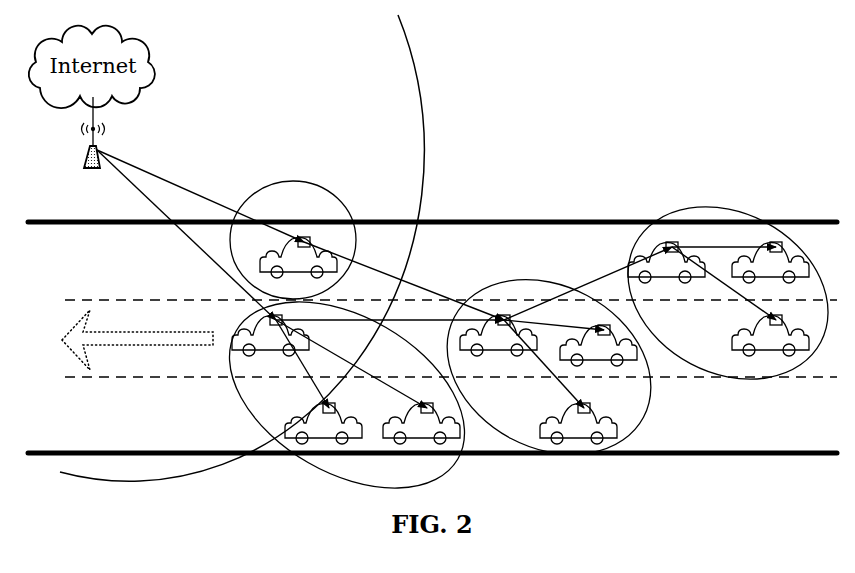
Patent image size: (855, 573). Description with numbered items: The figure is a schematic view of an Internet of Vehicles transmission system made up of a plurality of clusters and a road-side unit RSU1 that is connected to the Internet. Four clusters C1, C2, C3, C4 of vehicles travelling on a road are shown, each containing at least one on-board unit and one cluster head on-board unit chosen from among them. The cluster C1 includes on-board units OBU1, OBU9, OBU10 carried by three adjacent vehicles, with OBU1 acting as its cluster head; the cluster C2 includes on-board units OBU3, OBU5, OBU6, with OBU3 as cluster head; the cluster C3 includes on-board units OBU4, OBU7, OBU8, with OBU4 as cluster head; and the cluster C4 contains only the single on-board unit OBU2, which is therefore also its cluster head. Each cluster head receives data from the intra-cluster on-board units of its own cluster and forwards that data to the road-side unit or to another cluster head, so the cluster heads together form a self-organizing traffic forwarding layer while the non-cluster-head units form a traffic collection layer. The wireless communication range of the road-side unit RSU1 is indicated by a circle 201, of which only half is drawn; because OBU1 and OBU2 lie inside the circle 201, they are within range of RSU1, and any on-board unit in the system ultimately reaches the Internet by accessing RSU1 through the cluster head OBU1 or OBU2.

The circle 201 is at (426, 146).
The road-side unit RSU1 is at (92, 149).
The cluster C1 is at (347, 394).
The cluster C2 is at (548, 367).
The cluster C3 is at (726, 293).
The cluster C4 is at (293, 240).
The on-board unit OBU1 is at (270, 335).
The on-board unit OBU2 is at (298, 257).
The on-board unit OBU3 is at (498, 335).
The on-board unit OBU4 is at (666, 262).
The on-board unit OBU5 is at (598, 345).
The on-board unit OBU6 is at (578, 423).
The on-board unit OBU7 is at (770, 335).
The on-board unit OBU8 is at (770, 262).
The on-board unit OBU9 is at (323, 423).
The on-board unit OBU10 is at (421, 423).